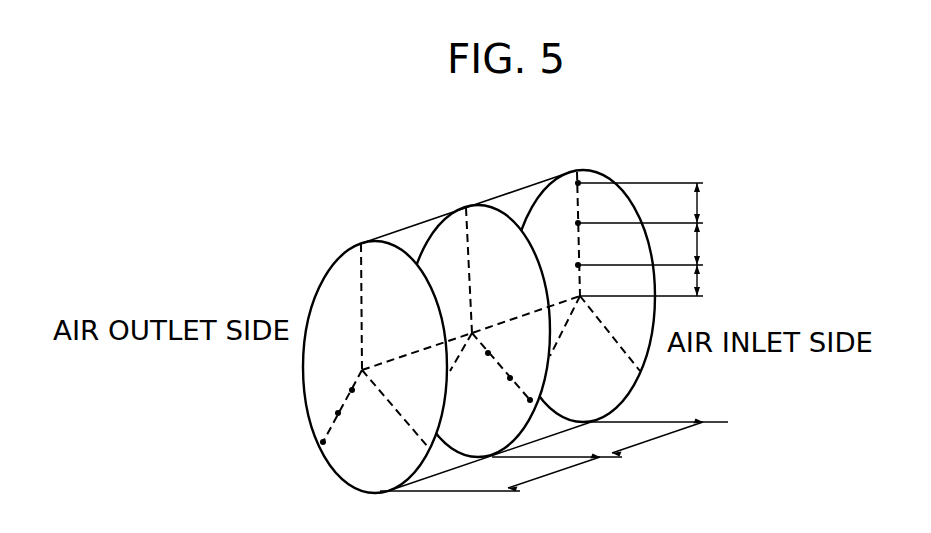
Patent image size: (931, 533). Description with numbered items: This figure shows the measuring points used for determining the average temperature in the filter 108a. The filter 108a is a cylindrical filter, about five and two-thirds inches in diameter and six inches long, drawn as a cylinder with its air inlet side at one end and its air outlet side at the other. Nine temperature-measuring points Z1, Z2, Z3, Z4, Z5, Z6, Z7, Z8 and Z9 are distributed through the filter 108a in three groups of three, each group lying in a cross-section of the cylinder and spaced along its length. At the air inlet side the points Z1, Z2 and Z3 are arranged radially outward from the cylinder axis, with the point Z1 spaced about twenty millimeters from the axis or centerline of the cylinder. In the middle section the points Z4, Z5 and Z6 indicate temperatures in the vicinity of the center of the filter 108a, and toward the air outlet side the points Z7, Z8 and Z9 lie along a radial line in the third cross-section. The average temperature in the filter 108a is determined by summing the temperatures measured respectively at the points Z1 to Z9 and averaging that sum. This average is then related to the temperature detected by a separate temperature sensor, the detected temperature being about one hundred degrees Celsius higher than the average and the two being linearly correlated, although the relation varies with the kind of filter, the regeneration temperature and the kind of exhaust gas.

The filter 108a is at (517, 186).
The temperature-measuring point Z1 is at (564, 268).
The temperature-measuring point Z2 is at (564, 229).
The temperature-measuring point Z3 is at (564, 196).
The temperature-measuring point Z4 is at (476, 369).
The temperature-measuring point Z5 is at (496, 394).
The temperature-measuring point Z6 is at (515, 415).
The temperature-measuring point Z7 is at (338, 386).
The temperature-measuring point Z8 is at (354, 419).
The temperature-measuring point Z9 is at (339, 446).